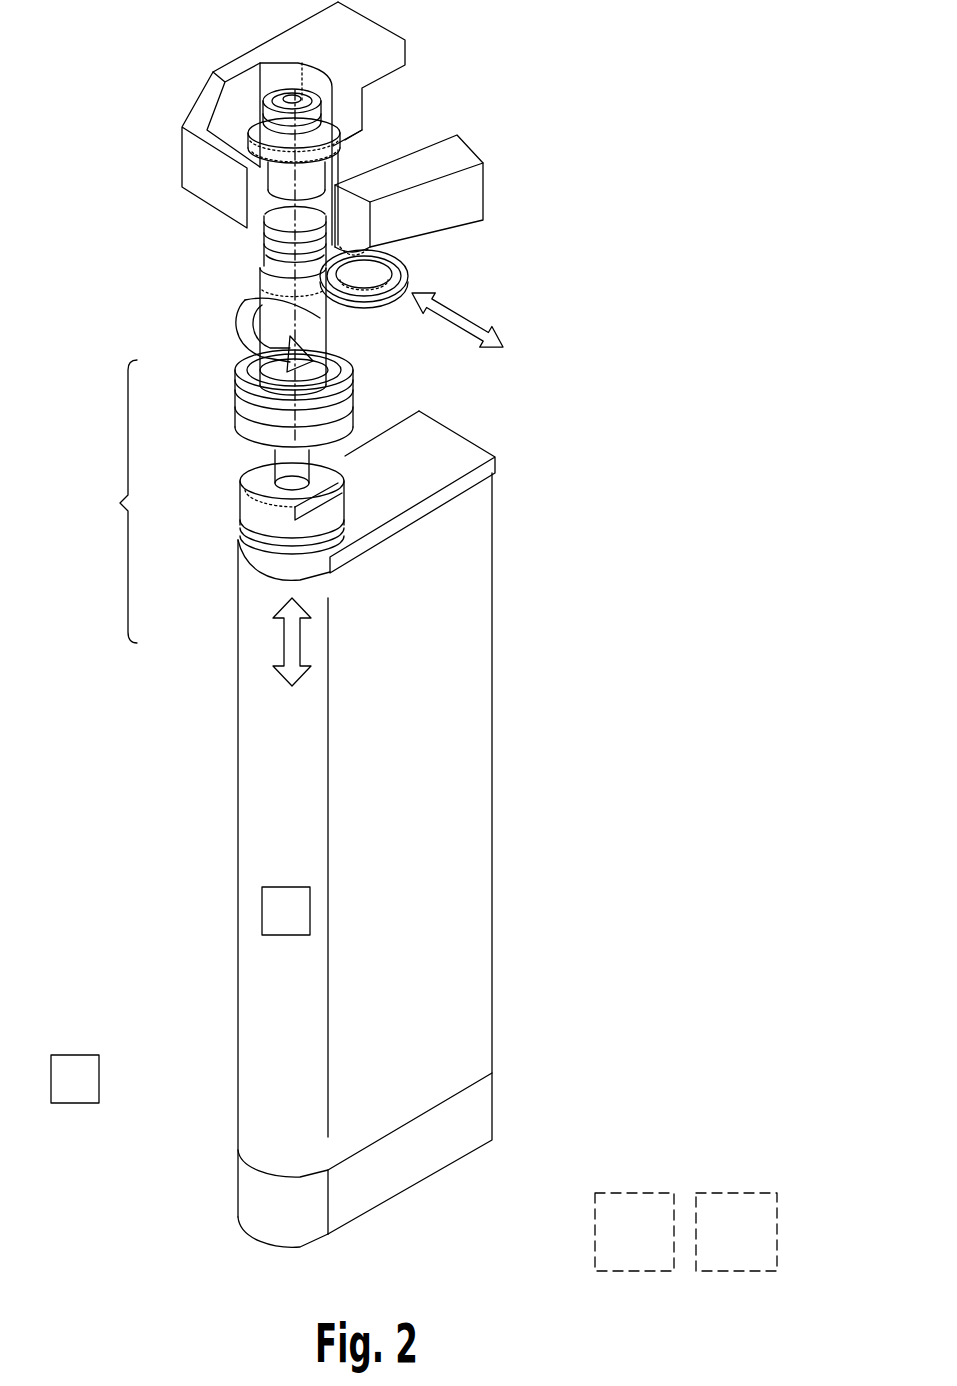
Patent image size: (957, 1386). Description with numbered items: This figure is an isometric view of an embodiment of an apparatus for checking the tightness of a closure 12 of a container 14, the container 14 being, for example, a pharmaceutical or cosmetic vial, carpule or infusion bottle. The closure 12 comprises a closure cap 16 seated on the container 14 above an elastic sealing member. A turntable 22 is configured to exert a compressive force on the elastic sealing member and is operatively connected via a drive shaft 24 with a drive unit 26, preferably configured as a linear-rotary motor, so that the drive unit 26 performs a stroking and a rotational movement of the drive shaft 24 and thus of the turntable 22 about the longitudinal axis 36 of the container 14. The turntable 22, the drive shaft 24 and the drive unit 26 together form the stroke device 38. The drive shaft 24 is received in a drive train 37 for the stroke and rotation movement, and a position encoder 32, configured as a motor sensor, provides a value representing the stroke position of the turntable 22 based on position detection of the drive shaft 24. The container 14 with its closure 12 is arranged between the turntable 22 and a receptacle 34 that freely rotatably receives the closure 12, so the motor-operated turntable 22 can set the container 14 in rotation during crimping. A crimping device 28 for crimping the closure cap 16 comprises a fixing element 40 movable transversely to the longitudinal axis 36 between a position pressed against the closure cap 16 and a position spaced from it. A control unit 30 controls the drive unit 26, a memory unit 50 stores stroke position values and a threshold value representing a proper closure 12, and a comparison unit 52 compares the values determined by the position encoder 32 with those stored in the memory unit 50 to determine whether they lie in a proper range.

The closure 12 is at (252, 260).
The container 14 is at (313, 333).
The closure cap 16 is at (268, 238).
The turntable 22 is at (218, 387).
The drive shaft 24 is at (292, 470).
The drive unit 26 is at (218, 638).
The crimping device 28 is at (515, 183).
The control unit 30 is at (75, 1079).
The position encoder 32 is at (285, 910).
The receptacle 34 is at (313, 210).
The longitudinal axis 36 is at (295, 319).
The drive train 37 is at (285, 796).
The stroke device 38 is at (112, 501).
The fixing element 40 is at (412, 267).
The memory unit 50 is at (634, 1232).
The comparison unit 52 is at (736, 1232).